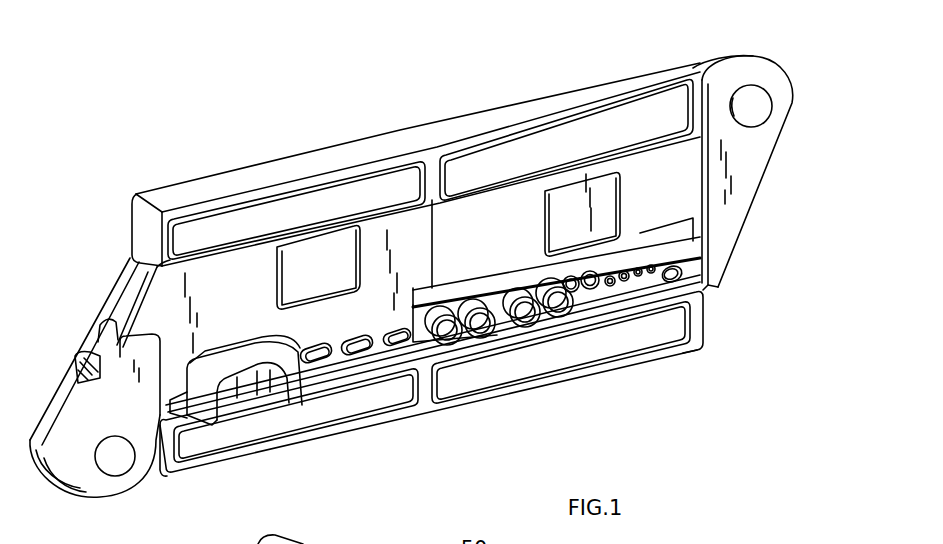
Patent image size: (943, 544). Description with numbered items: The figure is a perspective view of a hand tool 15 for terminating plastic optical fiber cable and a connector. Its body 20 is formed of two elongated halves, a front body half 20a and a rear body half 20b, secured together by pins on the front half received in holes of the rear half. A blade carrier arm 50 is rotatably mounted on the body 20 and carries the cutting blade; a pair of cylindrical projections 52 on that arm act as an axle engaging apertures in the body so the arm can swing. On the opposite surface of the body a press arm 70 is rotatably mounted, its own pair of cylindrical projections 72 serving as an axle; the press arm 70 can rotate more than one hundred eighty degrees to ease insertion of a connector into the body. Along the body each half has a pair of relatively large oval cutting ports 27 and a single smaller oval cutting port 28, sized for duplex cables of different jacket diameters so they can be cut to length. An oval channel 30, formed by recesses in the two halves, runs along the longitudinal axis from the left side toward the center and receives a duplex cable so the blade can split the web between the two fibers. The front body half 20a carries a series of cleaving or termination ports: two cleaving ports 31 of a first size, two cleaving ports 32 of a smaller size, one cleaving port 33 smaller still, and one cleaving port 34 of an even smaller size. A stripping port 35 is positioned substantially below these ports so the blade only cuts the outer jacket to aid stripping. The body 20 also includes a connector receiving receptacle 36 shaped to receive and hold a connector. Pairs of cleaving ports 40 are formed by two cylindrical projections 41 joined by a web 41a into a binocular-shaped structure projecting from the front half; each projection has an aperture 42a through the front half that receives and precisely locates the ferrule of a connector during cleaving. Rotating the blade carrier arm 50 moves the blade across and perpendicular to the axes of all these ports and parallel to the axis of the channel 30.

The hand tool 15 is at (672, 428).
The body 20 is at (723, 252).
The front body half 20a is at (150, 300).
The rear body half 20b is at (115, 277).
The cutting ports 27 is at (359, 367).
The cutting port 28 is at (391, 353).
The oval channel 30 is at (72, 363).
The cleaving ports 31 is at (593, 299).
The cleaving ports 32 is at (624, 292).
The cleaving port 33 is at (654, 285).
The cleaving port 34 is at (683, 354).
The stripping port 35 is at (705, 291).
The connector receiving receptacle 36 is at (283, 400).
The cleaving ports 40 is at (482, 348).
The cylindrical projections 41 is at (433, 313).
The web 41a is at (513, 293).
The aperture 42a is at (555, 318).
The blade carrier arm 50 is at (542, 105).
The cylindrical projections 52 is at (750, 97).
The press arm 70 is at (453, 407).
The cylindrical projections 72 is at (116, 458).